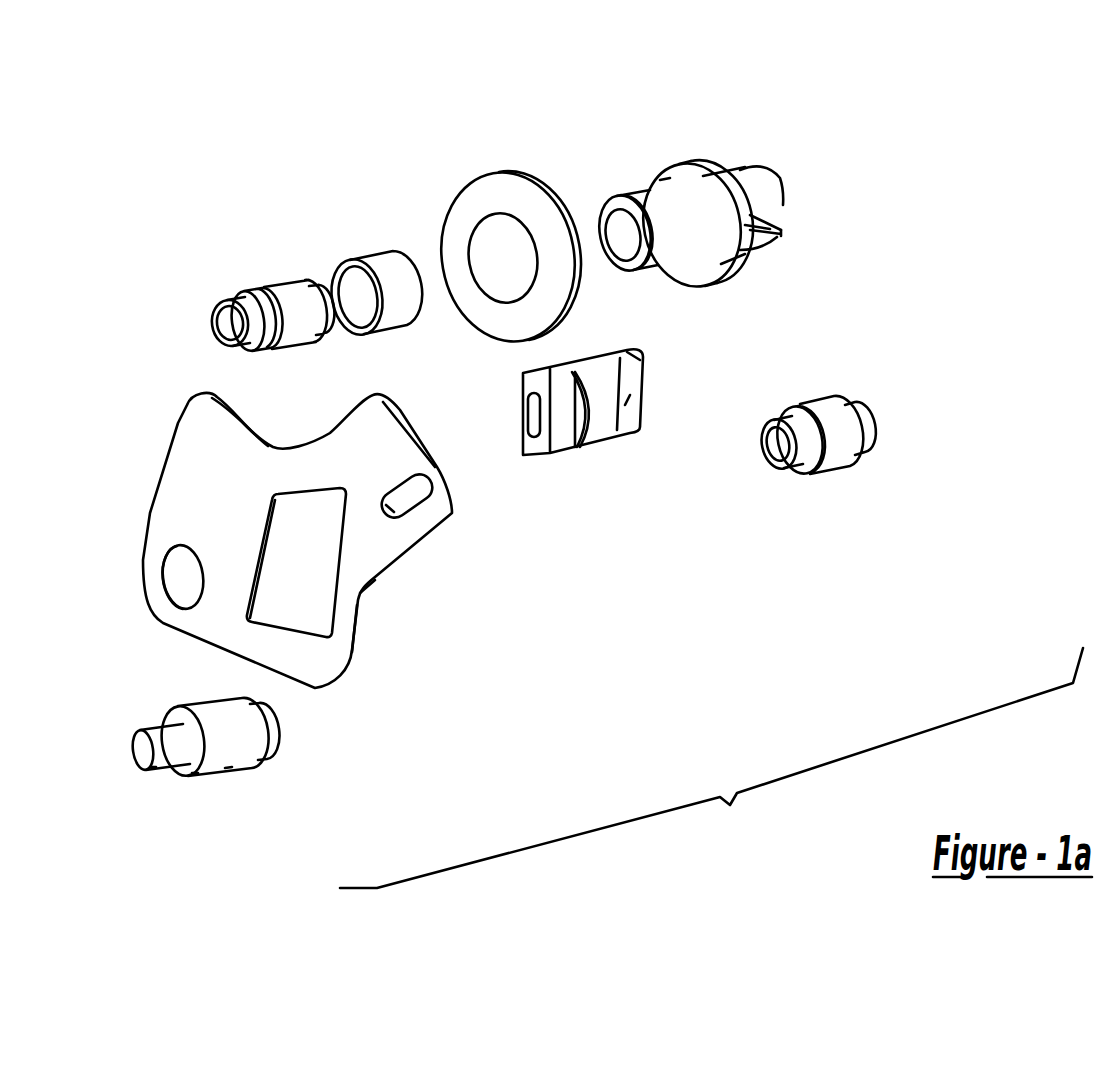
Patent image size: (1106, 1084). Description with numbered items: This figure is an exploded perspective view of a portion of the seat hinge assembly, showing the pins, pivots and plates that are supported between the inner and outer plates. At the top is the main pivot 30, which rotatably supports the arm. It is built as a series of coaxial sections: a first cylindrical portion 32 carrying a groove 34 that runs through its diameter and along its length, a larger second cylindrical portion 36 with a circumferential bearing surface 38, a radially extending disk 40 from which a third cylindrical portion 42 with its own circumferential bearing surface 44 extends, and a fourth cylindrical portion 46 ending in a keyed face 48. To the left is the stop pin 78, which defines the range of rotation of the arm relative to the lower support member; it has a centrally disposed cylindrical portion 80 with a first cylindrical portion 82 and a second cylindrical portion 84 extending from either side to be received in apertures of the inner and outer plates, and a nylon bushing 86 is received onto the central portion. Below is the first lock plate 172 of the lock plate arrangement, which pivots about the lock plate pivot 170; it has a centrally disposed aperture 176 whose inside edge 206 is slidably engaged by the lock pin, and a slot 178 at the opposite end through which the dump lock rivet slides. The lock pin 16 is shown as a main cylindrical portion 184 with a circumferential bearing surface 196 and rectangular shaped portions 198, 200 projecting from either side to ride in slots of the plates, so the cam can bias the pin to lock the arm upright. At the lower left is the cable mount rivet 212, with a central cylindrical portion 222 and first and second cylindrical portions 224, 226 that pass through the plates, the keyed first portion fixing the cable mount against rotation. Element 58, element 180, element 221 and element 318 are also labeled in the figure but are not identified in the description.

The lock pin 16 is at (577, 462).
The main pivot 30 is at (687, 150).
The first cylindrical portion 32 is at (762, 185).
The groove 34 is at (777, 218).
The second cylindrical portion 36 is at (727, 167).
The circumferential bearing surface 38 is at (780, 236).
The radially extending disk 40 is at (662, 173).
The third cylindrical portion 42 is at (647, 183).
The circumferential bearing surface 44 is at (687, 233).
The fourth cylindrical portion 46 is at (620, 230).
The keyed face 48 is at (620, 260).
The washer 58 is at (467, 285).
The stop pin 78 is at (263, 287).
The centrally disposed cylindrical portion 80 is at (290, 325).
The first cylindrical portion 82 is at (233, 343).
The second cylindrical portion 84 is at (310, 283).
The nylon bushing 86 is at (382, 257).
The lock plate pivot 170 is at (840, 470).
The first lock plate 172 is at (357, 653).
The centrally disposed aperture 176 is at (310, 572).
The slot 178 is at (430, 517).
The clip top portion 180 is at (620, 365).
The main cylindrical portion 184 is at (607, 433).
The circumferential bearing surface 196 is at (627, 400).
The rectangular shaped portion 198 is at (523, 433).
The rectangular shaped portion 200 is at (640, 425).
The inside edge 206 is at (265, 568).
The cable mount rivet 212 is at (227, 767).
The stud 221 is at (145, 750).
The central cylindrical portion 222 is at (153, 767).
The first cylindrical portion 224 is at (195, 773).
The second cylindrical portion 226 is at (260, 717).
The nut 318 is at (208, 713).